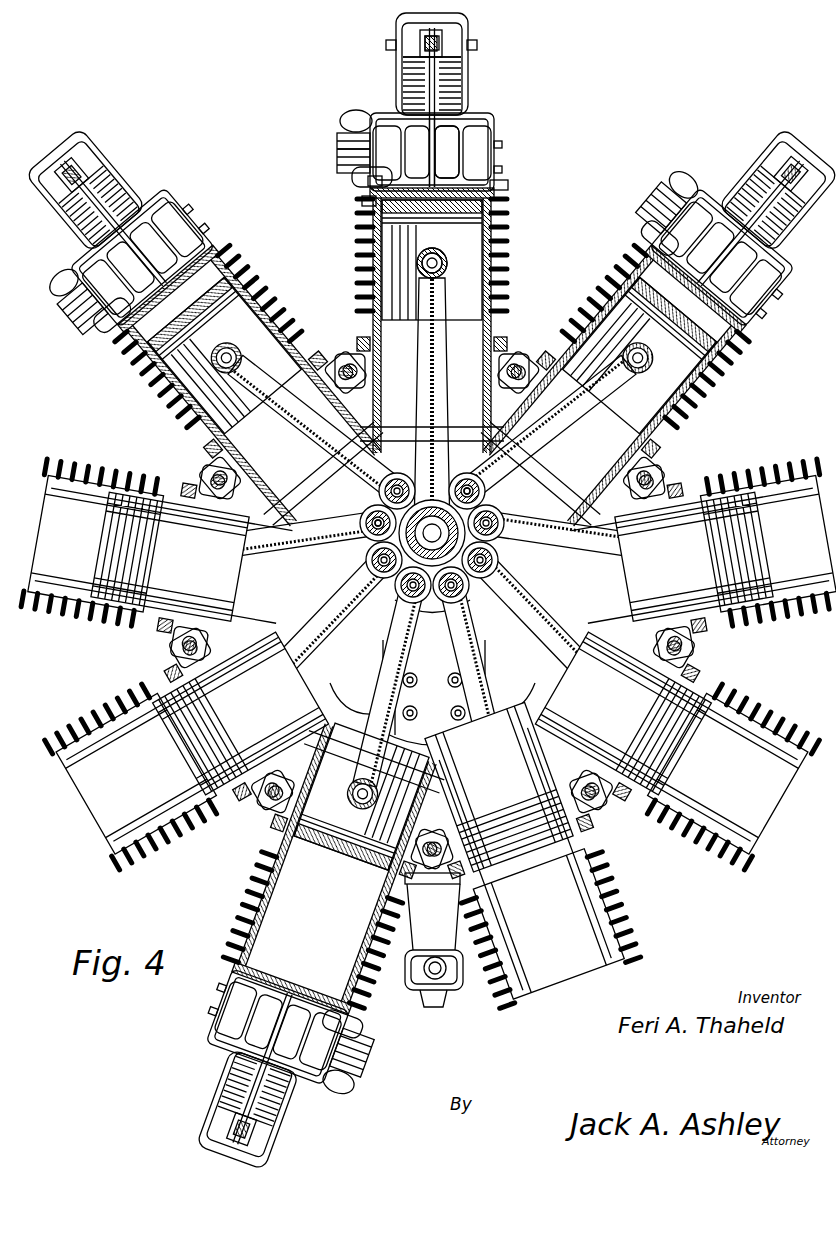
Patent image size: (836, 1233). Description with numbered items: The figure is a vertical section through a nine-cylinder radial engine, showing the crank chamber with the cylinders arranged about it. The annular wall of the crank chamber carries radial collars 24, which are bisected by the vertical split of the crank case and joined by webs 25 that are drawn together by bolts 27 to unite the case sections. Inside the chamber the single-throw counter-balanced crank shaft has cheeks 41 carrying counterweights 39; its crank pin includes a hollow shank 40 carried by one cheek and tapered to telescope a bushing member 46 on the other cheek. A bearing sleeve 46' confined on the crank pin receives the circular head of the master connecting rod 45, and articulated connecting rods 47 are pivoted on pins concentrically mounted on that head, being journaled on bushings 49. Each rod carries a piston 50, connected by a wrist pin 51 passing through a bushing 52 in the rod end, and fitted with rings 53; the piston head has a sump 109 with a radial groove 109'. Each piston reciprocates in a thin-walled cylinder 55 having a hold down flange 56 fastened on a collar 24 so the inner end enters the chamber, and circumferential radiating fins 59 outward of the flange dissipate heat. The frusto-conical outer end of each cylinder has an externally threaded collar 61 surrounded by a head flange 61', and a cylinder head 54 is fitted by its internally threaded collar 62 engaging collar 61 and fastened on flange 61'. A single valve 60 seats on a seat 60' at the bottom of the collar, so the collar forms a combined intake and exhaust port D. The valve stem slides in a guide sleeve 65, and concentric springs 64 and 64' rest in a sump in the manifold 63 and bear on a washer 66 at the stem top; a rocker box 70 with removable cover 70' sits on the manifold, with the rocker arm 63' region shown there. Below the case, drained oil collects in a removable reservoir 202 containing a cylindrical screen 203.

The radial collar 24 is at (652, 466).
The web 25 is at (190, 645).
The bolt 27 is at (213, 480).
The counterweight 39 is at (358, 688).
The hollow shank 40 is at (425, 498).
The cheek 41 is at (438, 655).
The master connecting rod 45 is at (448, 383).
The bushing member 46 is at (455, 470).
The bearing sleeve 46' is at (344, 549).
The articulated connecting rod 47 is at (303, 437).
The bushing 49 is at (372, 493).
The piston 50 is at (497, 250).
The wrist pin 51 is at (440, 278).
The bushing 52 is at (447, 263).
The ring 53 is at (505, 222).
The cylinder head 54 is at (468, 72).
The cylinder 55 is at (498, 330).
The hold down flange 56 is at (340, 345).
The radiating fin 59 is at (250, 277).
The valve 60 is at (351, 152).
The seat 60' is at (432, 535).
The externally threaded collar 61 is at (425, 596).
The head flange 61' is at (495, 211).
The internally screw-threaded collar 62 is at (204, 252).
The manifold 63 is at (354, 148).
The rocker pivot 63' is at (336, 158).
The valve spring 64 is at (424, 585).
The valve spring 64' is at (406, 591).
The guide sleeve 65 is at (400, 98).
The washer 66 is at (444, 52).
The rocker box 70 is at (306, 93).
The cover 70' is at (288, 79).
The sump 109 is at (299, 546).
The radial groove 109' is at (535, 191).
The intake and exhaust port D is at (490, 152).
The reservoir 202 is at (460, 985).
The cylindrical screen 203 is at (410, 986).